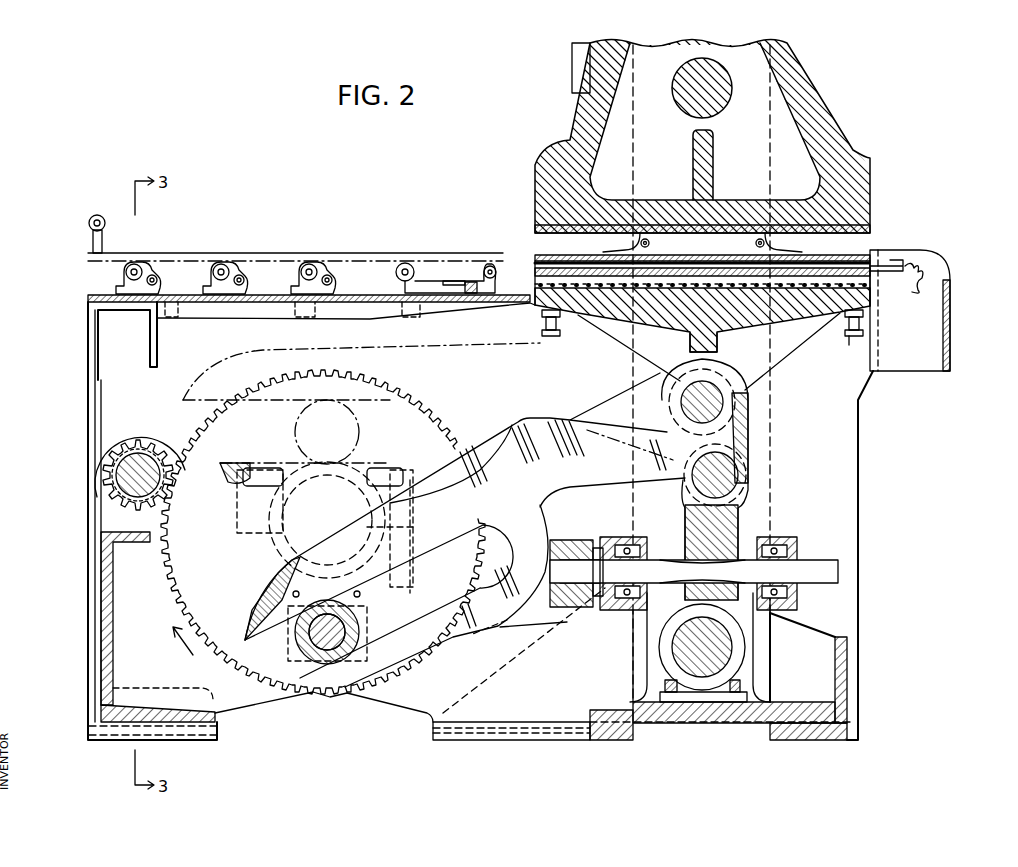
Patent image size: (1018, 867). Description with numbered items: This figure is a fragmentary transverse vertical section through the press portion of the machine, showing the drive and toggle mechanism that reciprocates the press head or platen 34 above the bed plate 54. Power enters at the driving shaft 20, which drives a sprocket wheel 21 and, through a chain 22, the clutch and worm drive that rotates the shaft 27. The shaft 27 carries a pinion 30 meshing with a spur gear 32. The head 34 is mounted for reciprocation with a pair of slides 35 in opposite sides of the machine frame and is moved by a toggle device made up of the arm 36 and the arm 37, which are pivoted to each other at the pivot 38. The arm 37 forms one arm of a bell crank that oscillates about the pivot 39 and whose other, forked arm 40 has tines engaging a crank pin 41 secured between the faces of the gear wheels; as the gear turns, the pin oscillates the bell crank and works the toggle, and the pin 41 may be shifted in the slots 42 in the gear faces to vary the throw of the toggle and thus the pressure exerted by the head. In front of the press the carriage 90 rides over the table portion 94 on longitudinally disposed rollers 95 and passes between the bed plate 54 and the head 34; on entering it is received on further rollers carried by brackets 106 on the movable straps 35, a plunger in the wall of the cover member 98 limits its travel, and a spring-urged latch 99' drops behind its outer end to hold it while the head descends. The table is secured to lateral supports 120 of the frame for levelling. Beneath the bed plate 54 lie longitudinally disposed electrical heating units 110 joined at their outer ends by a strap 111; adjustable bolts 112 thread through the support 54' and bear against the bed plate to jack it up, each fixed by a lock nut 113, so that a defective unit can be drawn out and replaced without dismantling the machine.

The driving shaft 20 is at (824, 567).
The sprocket wheel 21 is at (577, 592).
The chain 22 is at (583, 540).
The shaft 27 is at (110, 479).
The pinion 30 is at (124, 496).
The spur gear 32 is at (181, 581).
The press head or platen 34 is at (808, 150).
The slides 35 is at (780, 104).
The arm 36 is at (745, 648).
The arm 37 is at (750, 436).
The pivot 38 is at (755, 486).
The pivot 39 is at (750, 394).
The forked arm 40 is at (532, 424).
The crank pin 41 is at (296, 429).
The slots 42 is at (334, 696).
The bed plate 54 is at (694, 312).
The support 54' is at (729, 332).
The carriage 90 is at (170, 256).
The table portion 94 is at (366, 302).
The rollers 95 is at (226, 264).
The cover member 98 is at (950, 318).
The spring-urged latch 99' is at (446, 261).
The brackets 106 is at (775, 252).
The electrical heating units 110 is at (891, 262).
The strap 111 is at (916, 262).
The adjustable bolts 112 is at (852, 336).
The lock nut 113 is at (864, 318).
The lateral supports 120 is at (291, 314).